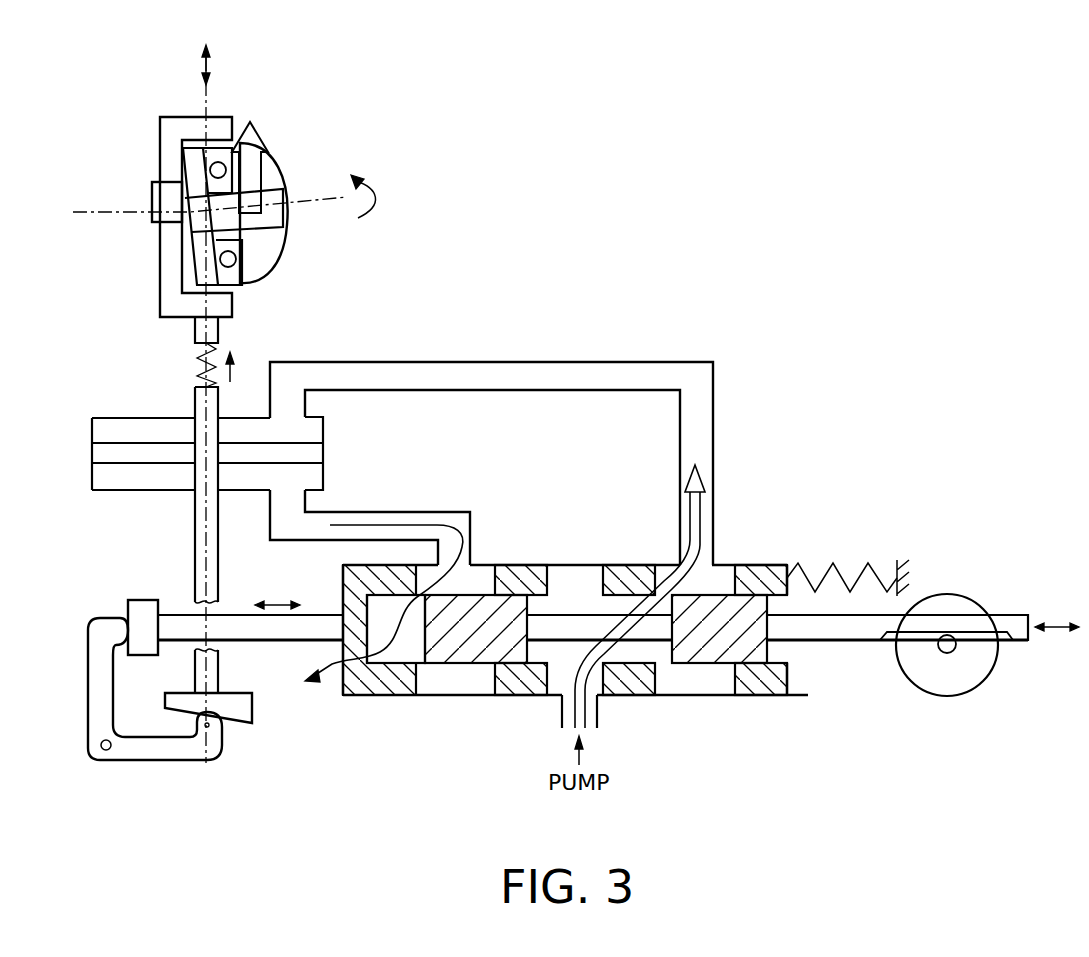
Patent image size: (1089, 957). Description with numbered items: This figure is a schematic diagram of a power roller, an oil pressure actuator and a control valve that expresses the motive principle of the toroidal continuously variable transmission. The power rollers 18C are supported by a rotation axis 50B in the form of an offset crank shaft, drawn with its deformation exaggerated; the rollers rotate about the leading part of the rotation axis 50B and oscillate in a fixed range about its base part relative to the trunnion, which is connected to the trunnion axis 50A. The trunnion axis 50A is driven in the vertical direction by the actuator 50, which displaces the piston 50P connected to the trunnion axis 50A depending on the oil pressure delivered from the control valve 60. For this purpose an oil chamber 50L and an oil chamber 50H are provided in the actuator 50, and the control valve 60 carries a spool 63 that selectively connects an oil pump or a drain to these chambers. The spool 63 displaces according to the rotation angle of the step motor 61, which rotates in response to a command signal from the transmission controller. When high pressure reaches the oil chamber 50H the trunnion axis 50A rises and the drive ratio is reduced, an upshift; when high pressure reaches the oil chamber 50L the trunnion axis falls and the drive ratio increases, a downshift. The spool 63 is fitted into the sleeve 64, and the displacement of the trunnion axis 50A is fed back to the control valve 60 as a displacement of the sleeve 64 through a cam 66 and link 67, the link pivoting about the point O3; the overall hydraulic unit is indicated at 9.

The rotation axis 50B is at (152, 195).
The power rollers 18C is at (267, 257).
The trunnion axis 50A is at (195, 405).
The actuator 50 is at (250, 393).
The oil chamber 50L is at (125, 425).
The piston 50P is at (110, 458).
The oil chamber 50H is at (160, 478).
The hydraulic actuator 9 is at (766, 727).
The sleeve 64 is at (363, 696).
The control valve 60 is at (468, 708).
The spool 63 is at (712, 696).
The step motor 61 is at (937, 688).
The cam 66 is at (255, 720).
The link 67 is at (140, 752).
The pivot axis O3 is at (220, 765).